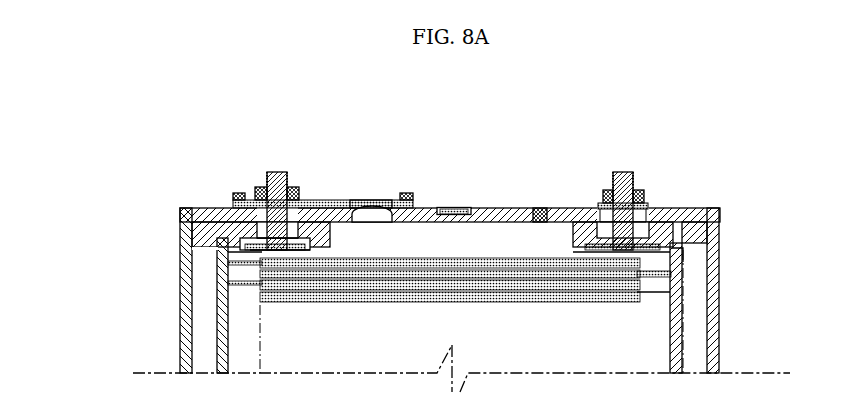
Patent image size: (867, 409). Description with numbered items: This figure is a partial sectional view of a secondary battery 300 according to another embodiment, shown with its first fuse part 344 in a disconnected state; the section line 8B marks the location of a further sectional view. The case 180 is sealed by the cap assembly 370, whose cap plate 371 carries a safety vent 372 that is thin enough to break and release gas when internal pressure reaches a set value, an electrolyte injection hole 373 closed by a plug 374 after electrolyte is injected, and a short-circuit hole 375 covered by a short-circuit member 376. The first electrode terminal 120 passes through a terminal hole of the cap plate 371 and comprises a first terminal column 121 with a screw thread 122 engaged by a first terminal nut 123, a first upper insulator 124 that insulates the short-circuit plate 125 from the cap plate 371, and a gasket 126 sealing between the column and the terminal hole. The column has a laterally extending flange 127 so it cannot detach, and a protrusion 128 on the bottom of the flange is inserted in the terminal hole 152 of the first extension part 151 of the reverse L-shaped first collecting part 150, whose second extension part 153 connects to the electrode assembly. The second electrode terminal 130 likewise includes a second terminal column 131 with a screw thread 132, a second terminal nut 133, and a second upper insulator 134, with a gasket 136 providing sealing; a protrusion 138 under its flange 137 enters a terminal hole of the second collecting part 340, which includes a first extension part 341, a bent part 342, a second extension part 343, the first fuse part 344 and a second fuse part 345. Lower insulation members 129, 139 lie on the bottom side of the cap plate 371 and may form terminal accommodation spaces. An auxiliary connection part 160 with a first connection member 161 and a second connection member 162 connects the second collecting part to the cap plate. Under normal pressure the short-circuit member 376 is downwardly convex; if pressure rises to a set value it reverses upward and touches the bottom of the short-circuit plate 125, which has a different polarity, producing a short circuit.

The secondary battery 300 is at (196, 108).
The first electrode terminal 120 is at (308, 185).
The first terminal column 121 is at (277, 171).
The screw thread 122 is at (262, 186).
The first terminal nut 123 is at (292, 186).
The first upper insulator 124 is at (406, 192).
The short-circuit plate 125 is at (325, 199).
The gasket 126 is at (238, 193).
The flange 127 is at (238, 228).
The protrusion 128 is at (306, 244).
The lower insulation member 129 is at (195, 229).
The second electrode terminal 130 is at (620, 186).
The second terminal column 131 is at (622, 171).
The screw thread 132 is at (642, 189).
The second terminal nut 133 is at (607, 189).
The second upper insulator 134 is at (647, 204).
The gasket 136 is at (604, 217).
The flange 137 is at (578, 240).
The protrusion 138 is at (690, 292).
The lower insulation member 139 is at (710, 246).
The first collecting part 150 is at (225, 300).
The first extension part 151 is at (228, 254).
The terminal hole 152 is at (228, 272).
The second extension part 153 is at (222, 325).
The auxiliary connection part 160 is at (450, 309).
The first connection member 161 is at (590, 303).
The second connection member 162 is at (610, 340).
The case 180 is at (716, 358).
The second collecting part 340 is at (685, 315).
The first extension part 341 is at (670, 208).
The bent part 342 is at (720, 227).
The second extension part 343 is at (688, 339).
The first fuse part 344 is at (700, 209).
The second fuse part 345 is at (690, 258).
The cap assembly 370 is at (504, 206).
The cap plate 371 is at (425, 208).
The safety vent 372 is at (470, 208).
The electrolyte injection hole 373 is at (526, 224).
The plug 374 is at (541, 207).
The short-circuit hole 375 is at (382, 224).
The short-circuit member 376 is at (371, 199).
The section line 8B is at (726, 205).